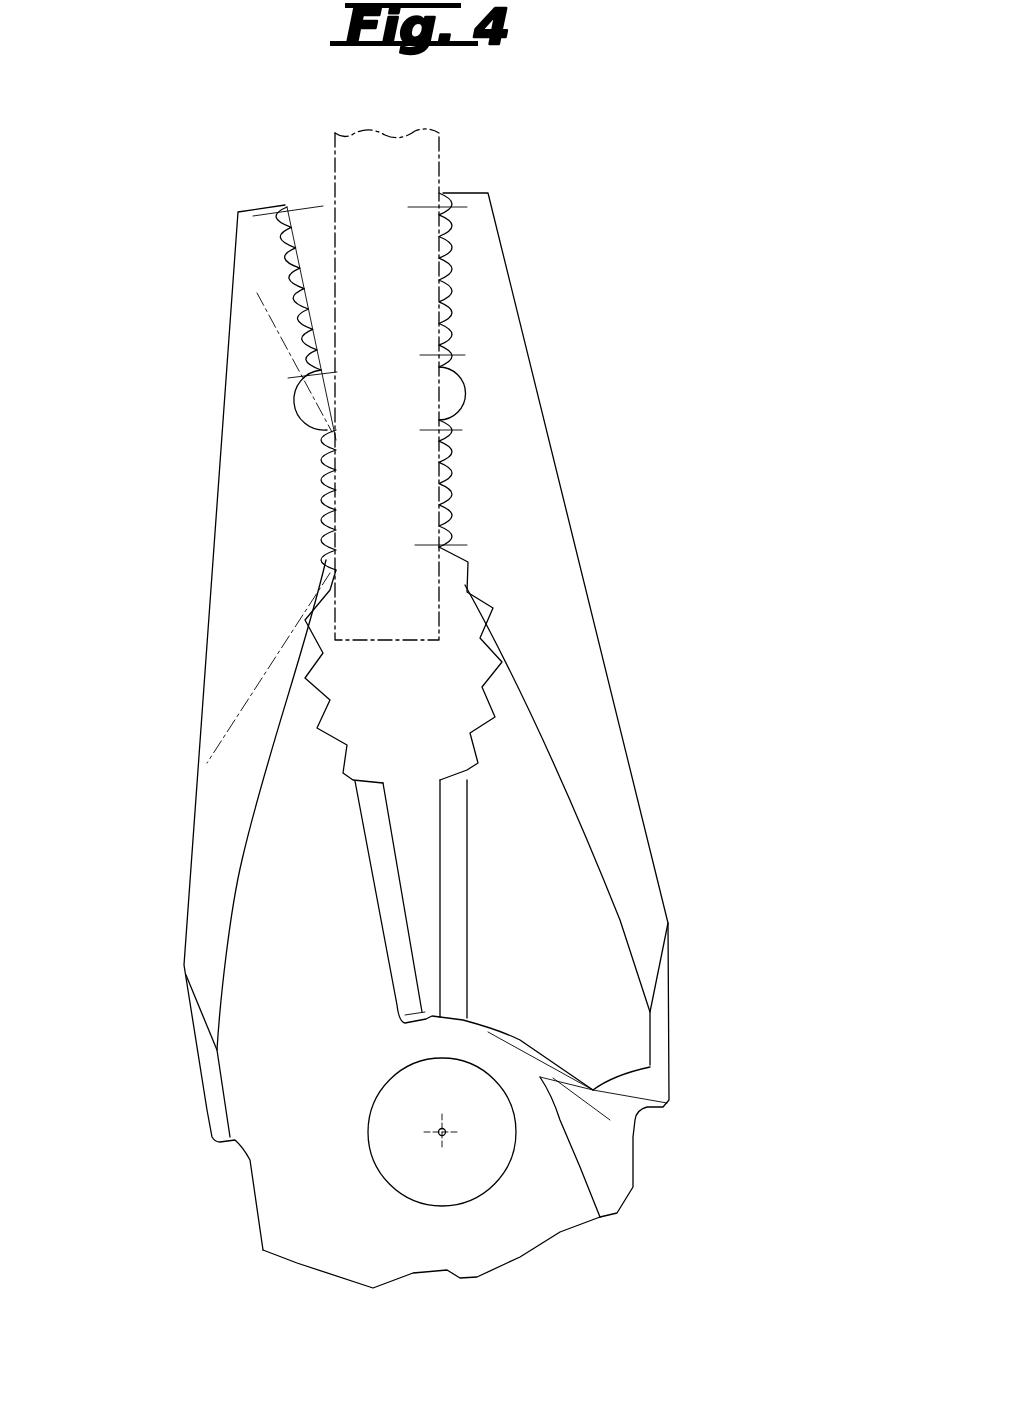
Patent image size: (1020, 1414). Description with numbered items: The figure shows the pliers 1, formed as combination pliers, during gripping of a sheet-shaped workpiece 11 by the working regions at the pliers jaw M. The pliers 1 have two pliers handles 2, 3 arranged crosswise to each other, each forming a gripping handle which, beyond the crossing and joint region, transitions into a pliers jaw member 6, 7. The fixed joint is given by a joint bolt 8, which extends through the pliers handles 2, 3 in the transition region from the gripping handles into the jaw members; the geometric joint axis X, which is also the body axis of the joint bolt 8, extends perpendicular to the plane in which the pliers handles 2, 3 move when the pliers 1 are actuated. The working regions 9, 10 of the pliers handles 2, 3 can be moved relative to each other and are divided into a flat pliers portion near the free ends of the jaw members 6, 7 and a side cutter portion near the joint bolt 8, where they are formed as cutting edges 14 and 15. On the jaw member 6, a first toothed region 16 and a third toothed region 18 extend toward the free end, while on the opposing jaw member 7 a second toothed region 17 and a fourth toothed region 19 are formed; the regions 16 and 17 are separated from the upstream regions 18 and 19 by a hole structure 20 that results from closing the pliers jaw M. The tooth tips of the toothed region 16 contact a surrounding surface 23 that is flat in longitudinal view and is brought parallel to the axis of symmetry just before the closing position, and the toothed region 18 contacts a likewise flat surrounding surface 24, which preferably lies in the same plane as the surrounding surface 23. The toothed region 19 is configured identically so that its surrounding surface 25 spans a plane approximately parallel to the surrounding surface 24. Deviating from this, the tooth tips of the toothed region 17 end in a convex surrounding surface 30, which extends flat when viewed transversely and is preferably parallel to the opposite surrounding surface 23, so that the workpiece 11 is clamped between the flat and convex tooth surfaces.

The pliers 1 is at (190, 205).
The pliers jaw M is at (317, 227).
The workpiece 11 is at (345, 172).
The fourth toothed region 19 is at (293, 265).
The third toothed region 18 is at (443, 243).
The hole structure 20 is at (445, 392).
The second toothed region 17 is at (325, 487).
The first toothed region 16 is at (443, 468).
The surrounding surface 24 is at (440, 287).
The surrounding surface 23 is at (450, 513).
The surrounding surface 25 is at (297, 293).
The surrounding surface 30 is at (333, 555).
The pliers jaw member 7 is at (203, 883).
The pliers jaw member 6 is at (648, 895).
The working region 10 is at (330, 867).
The working region 9 is at (522, 877).
The cutting edge 15 is at (397, 943).
The cutting edge 14 is at (460, 969).
The joint bolt 8 is at (460, 1175).
The joint axis X is at (442, 1132).
The pliers handle 3 is at (172, 1055).
The pliers handle 2 is at (702, 1056).